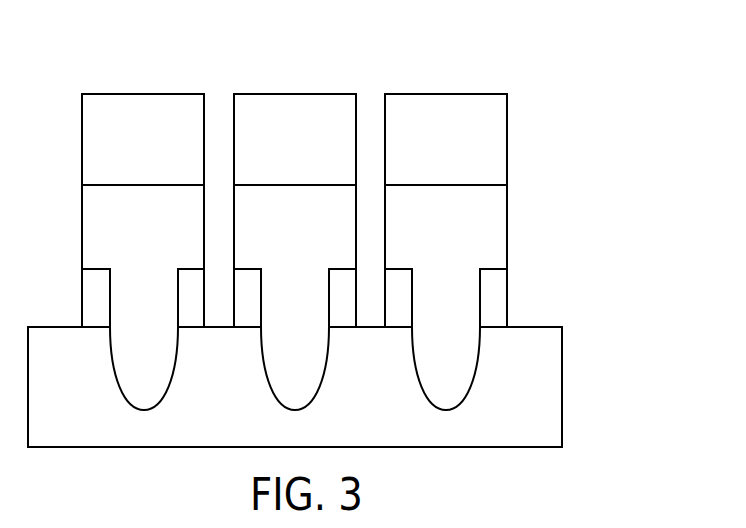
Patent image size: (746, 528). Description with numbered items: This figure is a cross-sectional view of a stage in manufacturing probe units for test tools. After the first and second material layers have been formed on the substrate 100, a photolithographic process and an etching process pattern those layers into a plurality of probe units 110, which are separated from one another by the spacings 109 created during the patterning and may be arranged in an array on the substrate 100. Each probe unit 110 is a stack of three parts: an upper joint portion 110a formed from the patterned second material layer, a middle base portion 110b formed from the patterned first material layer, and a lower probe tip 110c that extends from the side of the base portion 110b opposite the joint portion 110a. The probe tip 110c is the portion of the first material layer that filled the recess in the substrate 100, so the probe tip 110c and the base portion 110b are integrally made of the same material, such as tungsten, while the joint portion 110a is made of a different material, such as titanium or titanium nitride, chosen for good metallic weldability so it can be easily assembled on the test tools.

The substrate 100 is at (547, 395).
The spacings 109 is at (376, 92).
The probe unit 110 is at (382, 210).
The joint portion 110a is at (495, 143).
The base portion 110b is at (495, 227).
The probe tip 110c is at (445, 315).